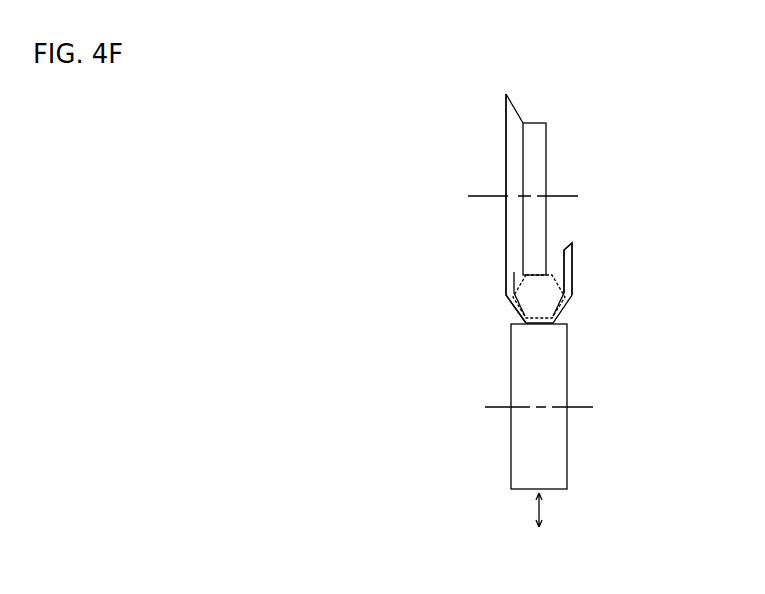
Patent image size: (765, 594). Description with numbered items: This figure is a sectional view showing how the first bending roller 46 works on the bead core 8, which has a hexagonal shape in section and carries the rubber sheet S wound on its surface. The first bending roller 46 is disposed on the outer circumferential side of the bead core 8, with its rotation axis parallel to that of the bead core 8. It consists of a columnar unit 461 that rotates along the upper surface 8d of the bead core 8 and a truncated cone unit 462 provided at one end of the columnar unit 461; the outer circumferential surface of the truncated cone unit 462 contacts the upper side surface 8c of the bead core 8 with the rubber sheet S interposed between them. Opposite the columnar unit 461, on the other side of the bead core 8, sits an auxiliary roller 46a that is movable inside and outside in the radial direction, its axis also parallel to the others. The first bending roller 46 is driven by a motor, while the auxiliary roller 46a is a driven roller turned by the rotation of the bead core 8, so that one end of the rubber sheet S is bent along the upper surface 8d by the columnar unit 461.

The first bending roller 46 is at (506, 145).
The truncated cone unit 462 is at (506, 170).
The columnar unit 461 is at (546, 169).
The bead core 8 is at (545, 281).
The upper side surface 8c is at (517, 282).
The upper surface 8d is at (540, 295).
The rubber sheet S is at (575, 283).
The auxiliary roller 46a is at (511, 378).